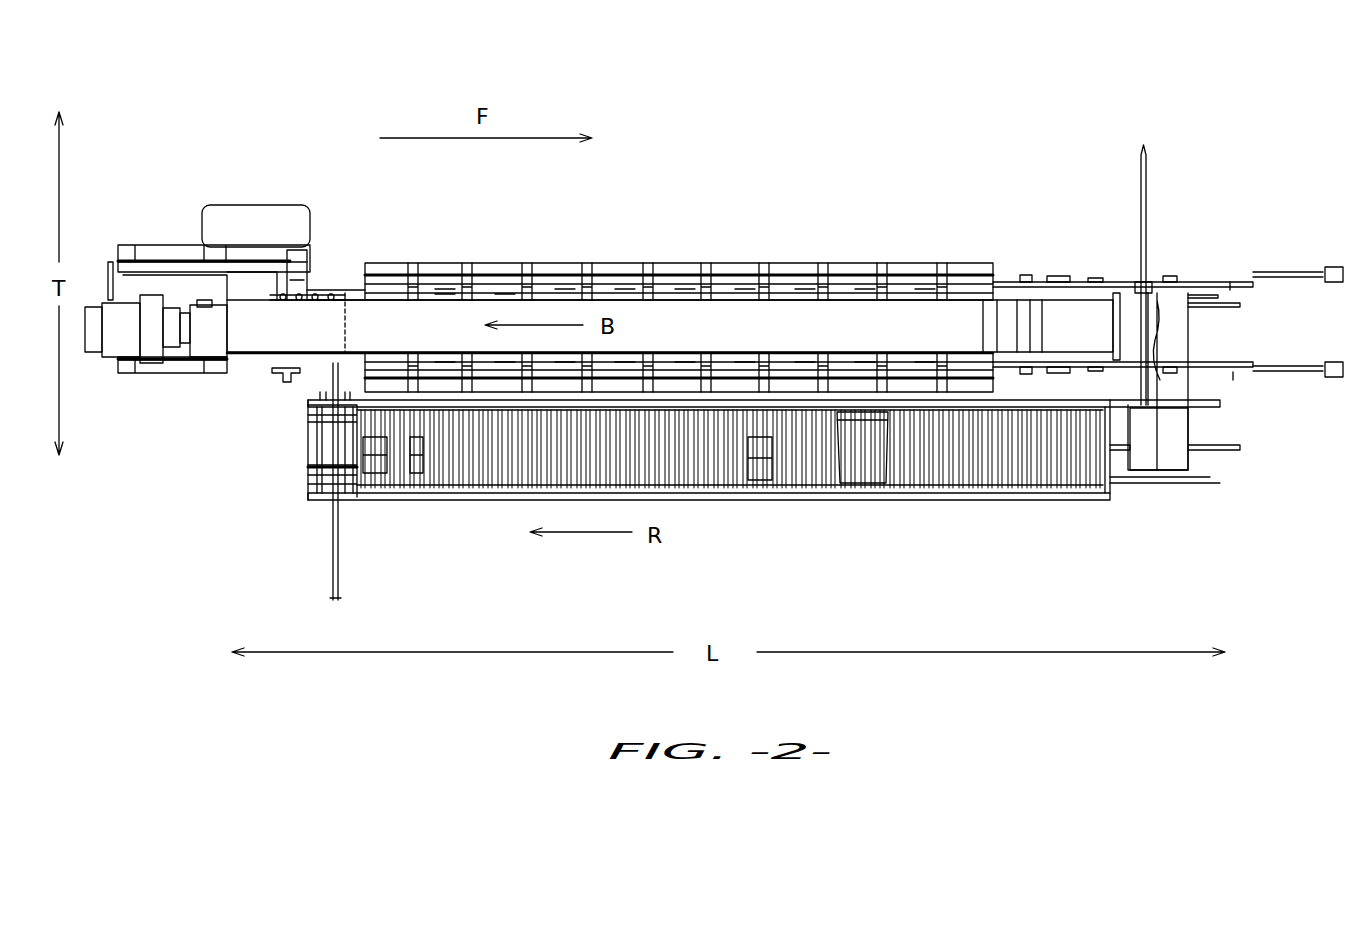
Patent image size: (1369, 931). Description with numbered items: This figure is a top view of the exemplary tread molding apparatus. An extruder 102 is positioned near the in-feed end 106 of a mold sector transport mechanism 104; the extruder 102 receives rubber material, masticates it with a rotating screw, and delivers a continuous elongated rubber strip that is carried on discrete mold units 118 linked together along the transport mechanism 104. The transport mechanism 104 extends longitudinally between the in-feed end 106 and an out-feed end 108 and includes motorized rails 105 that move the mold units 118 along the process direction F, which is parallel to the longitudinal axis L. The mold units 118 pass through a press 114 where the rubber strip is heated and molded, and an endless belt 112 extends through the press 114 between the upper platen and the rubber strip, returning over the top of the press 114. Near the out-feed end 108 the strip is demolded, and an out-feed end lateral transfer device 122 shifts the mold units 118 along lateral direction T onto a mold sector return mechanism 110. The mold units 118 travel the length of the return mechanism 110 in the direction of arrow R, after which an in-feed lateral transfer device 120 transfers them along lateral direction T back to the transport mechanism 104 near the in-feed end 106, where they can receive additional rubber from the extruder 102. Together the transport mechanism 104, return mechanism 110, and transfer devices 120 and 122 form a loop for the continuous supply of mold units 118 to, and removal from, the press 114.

The extruder 102 is at (89, 350).
The mold sector transport mechanism 104 is at (349, 261).
The motorized rails 105 is at (1237, 274).
The in-feed end 106 is at (333, 238).
The out-feed end 108 is at (1164, 263).
The mold sector return mechanism 110 is at (975, 493).
The endless belt 112 is at (805, 318).
The press 114 is at (497, 292).
The mold unit 118 is at (862, 467).
The in-feed lateral transfer device 120 is at (318, 401).
The out-feed end lateral transfer device 122 is at (1182, 428).